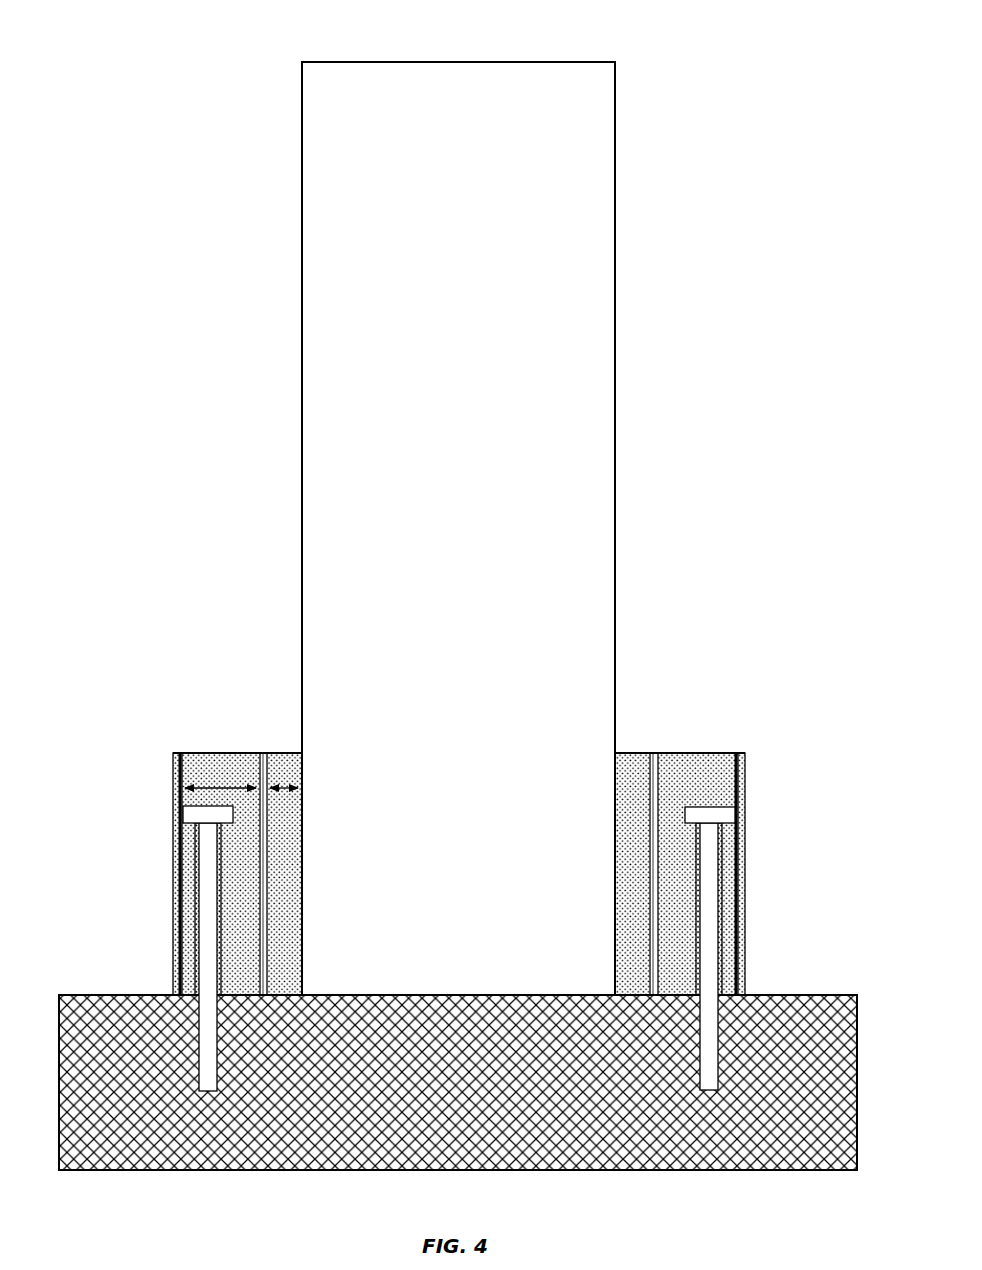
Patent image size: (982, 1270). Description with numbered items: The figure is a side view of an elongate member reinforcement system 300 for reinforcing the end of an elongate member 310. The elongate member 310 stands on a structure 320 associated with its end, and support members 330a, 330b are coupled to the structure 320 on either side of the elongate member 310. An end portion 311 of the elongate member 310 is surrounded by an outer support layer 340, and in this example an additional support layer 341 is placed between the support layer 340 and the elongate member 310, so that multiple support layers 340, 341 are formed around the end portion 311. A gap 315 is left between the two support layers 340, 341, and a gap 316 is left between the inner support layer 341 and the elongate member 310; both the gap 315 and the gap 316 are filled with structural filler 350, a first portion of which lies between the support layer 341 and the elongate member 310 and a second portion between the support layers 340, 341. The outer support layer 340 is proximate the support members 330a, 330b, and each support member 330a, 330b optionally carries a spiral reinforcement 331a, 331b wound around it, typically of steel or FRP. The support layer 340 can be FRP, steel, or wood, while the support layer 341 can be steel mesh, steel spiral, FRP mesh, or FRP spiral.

The elongate member reinforcement system 300 is at (156, 48).
The elongate member 310 is at (302, 170).
The end portion 311 is at (630, 810).
The gap 315 is at (215, 785).
The gap 316 is at (282, 785).
The structure 320 is at (88, 995).
The support member 330a is at (205, 898).
The support member 330b is at (712, 909).
The spiral reinforcement 331a is at (195, 856).
The spiral reinforcement 331b is at (722, 875).
The support layer 340 is at (177, 778).
The support layer 341 is at (254, 770).
The structural filler 350 is at (285, 983).